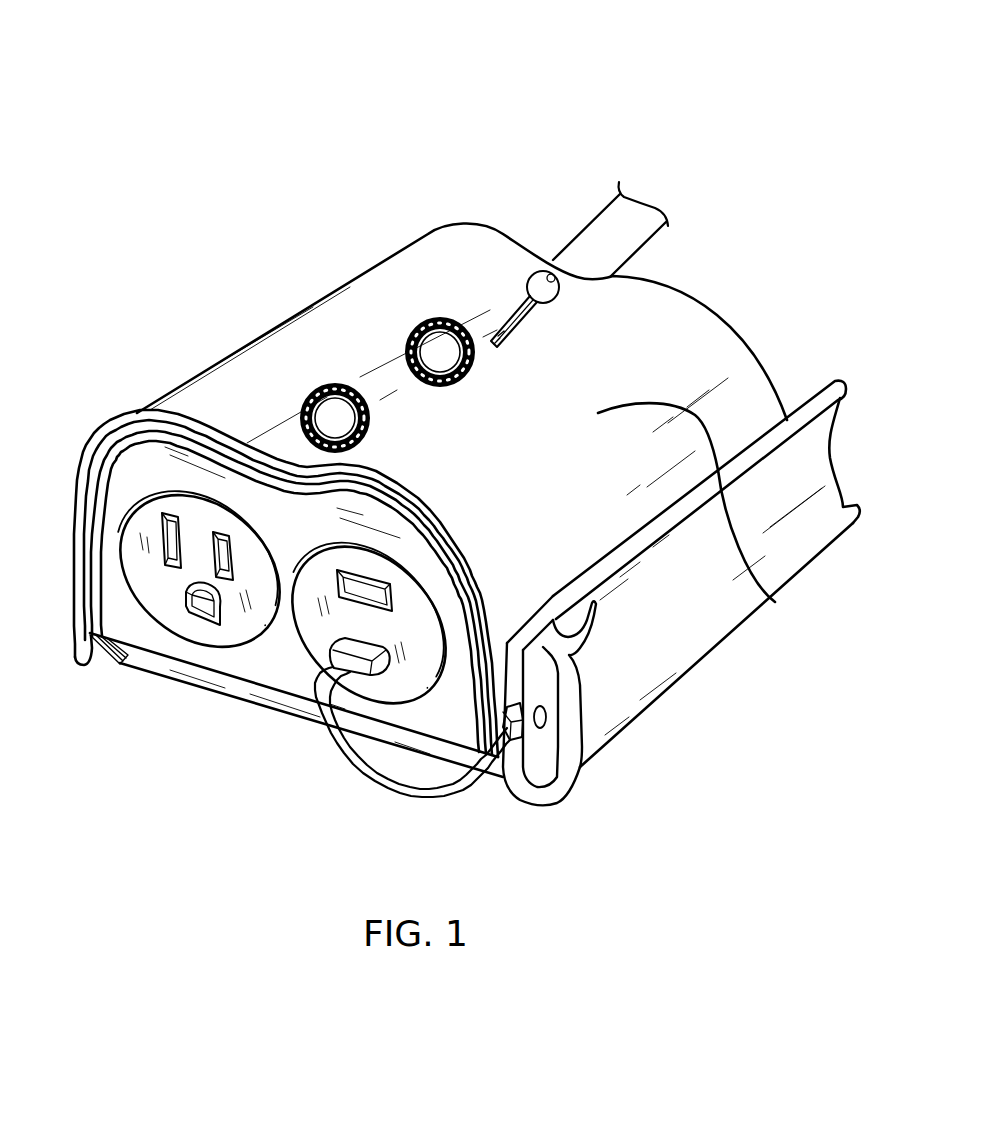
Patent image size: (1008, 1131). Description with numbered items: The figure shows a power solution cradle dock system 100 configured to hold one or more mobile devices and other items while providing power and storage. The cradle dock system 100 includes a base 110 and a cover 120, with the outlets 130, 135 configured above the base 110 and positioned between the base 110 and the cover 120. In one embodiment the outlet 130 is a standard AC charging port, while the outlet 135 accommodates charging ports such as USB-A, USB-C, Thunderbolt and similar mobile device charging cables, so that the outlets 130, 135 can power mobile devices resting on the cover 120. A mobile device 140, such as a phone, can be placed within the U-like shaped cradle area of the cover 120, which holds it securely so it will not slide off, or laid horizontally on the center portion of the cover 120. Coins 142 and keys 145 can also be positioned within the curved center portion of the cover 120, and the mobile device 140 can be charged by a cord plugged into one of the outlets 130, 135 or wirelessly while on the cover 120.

The power solution cradle dock system 100 is at (733, 42).
The base 110 is at (232, 697).
The cover 120 is at (775, 602).
The outlet 130 is at (180, 600).
The outlet 135 is at (328, 663).
The mobile device 140 is at (523, 755).
The coin 142 is at (420, 323).
The keys 145 is at (531, 276).